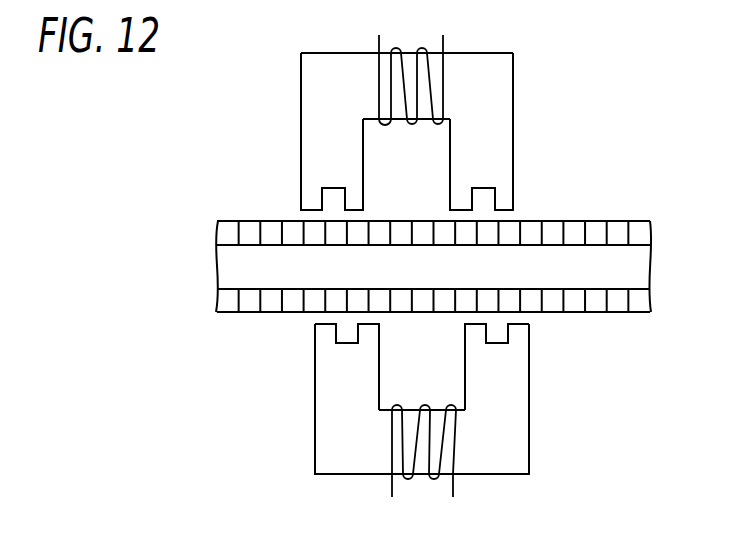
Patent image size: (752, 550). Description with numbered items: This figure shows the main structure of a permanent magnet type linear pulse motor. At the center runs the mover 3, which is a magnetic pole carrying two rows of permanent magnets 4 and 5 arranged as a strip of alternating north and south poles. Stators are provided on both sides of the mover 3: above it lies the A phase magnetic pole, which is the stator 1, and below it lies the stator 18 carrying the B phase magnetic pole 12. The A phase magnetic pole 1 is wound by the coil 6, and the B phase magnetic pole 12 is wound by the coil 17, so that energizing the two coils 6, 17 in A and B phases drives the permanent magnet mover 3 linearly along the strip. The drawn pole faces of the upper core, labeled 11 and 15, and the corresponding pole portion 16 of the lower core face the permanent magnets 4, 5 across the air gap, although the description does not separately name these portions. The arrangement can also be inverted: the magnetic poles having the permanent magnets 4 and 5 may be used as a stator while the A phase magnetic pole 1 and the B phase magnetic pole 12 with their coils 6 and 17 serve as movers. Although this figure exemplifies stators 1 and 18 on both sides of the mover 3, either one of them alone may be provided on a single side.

The A phase magnetic pole 1 is at (416, 111).
The coil 6 is at (444, 47).
The left pole leg of upper core 11 is at (300, 172).
The right pole leg of upper core 15 is at (515, 172).
The permanent magnet 5 is at (623, 242).
The permanent magnet 4 is at (446, 238).
The mover 3 is at (454, 238).
The B phase magnetic pole 12 is at (315, 352).
The right pole leg of lower core 16 is at (529, 352).
The stator 18 is at (425, 399).
The coil 17 is at (455, 480).